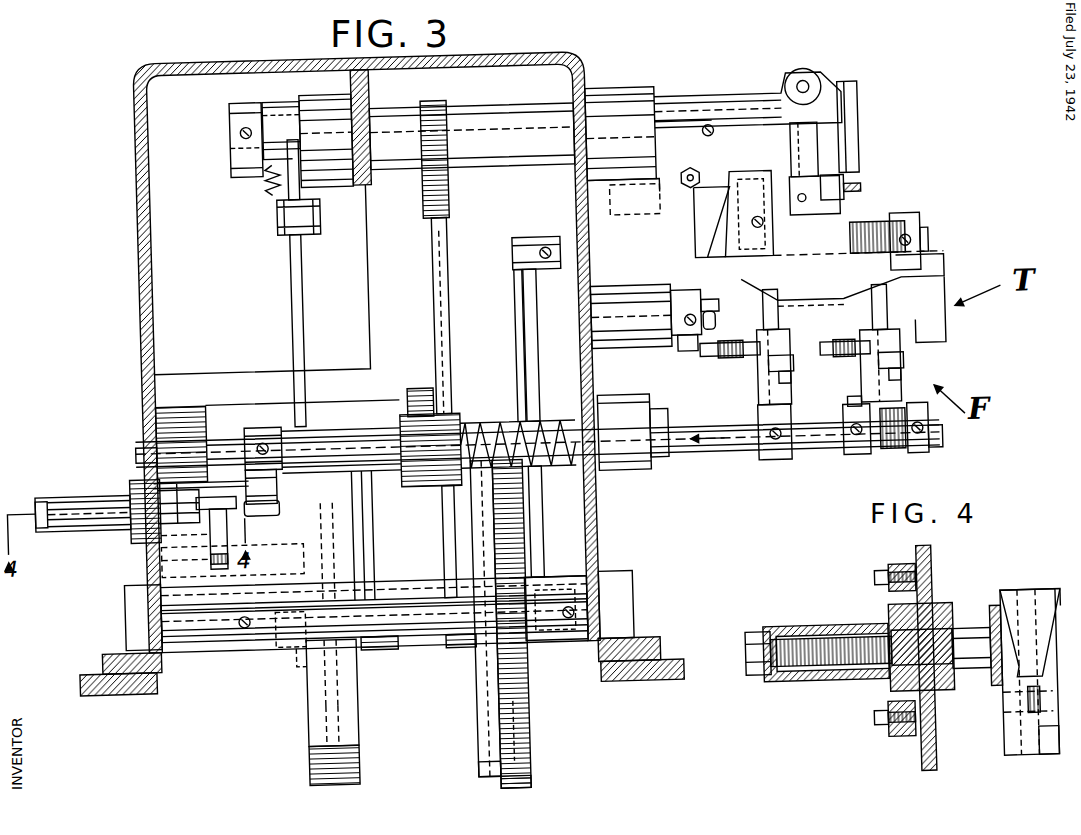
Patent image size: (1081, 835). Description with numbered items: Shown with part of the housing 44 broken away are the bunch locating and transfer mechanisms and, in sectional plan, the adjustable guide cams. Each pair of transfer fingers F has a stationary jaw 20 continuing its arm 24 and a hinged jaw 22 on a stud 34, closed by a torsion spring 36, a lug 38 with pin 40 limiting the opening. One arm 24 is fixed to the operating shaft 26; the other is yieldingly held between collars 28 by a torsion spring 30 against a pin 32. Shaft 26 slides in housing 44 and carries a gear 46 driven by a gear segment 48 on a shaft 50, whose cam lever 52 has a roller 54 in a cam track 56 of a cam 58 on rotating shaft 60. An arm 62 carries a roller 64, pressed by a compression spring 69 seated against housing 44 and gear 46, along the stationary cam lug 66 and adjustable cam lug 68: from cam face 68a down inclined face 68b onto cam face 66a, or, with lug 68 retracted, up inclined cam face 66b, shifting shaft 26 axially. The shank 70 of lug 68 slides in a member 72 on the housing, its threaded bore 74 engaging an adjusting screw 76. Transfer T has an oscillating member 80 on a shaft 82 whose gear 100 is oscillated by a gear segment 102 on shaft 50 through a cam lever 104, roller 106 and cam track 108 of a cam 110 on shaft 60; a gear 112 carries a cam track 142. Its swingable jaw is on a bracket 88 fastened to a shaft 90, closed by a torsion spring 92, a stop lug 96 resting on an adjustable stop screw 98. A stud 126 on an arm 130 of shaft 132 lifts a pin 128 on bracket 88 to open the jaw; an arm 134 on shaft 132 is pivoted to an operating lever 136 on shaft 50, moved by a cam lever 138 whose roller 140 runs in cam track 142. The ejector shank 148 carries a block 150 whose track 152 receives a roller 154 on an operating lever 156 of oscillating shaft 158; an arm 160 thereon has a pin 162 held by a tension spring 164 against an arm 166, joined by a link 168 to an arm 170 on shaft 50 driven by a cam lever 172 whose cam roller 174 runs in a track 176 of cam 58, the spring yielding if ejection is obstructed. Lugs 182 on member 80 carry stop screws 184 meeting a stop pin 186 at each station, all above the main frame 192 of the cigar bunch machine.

In FIG. 3, the stationary jaw 20 is at (766, 325).
In FIG. 3, the hinged jaw 22 is at (773, 296).
In FIG. 3, the arm 24 is at (791, 430).
In FIG. 3, the horizontal operating shaft 26 is at (942, 447).
In FIG. 3, the collars 28 is at (850, 463).
In FIG. 3, the torsion spring 30 is at (892, 458).
In FIG. 3, the pin 32 is at (855, 413).
In FIG. 3, the stud 34 is at (720, 361).
In FIG. 3, the torsion spring 36 is at (740, 363).
In FIG. 3, the lug 38 is at (790, 378).
In FIG. 3, the pin 40 is at (768, 380).
In FIG. 3, the housing 44 is at (143, 290).
In FIG. 4, the housing 44 is at (927, 570).
In FIG. 3, the gear 46 is at (415, 483).
In FIG. 3, the gear segment 48 is at (418, 385).
In FIG. 3, the shaft 50 is at (200, 397).
In FIG. 3, the cam lever 52 is at (370, 565).
In FIG. 3, the roller 54 is at (365, 645).
In FIG. 3, the cam track 56 is at (350, 700).
In FIG. 3, the cam 58 is at (350, 775).
In FIG. 3, the shaft 60 is at (405, 595).
In FIG. 3, the arm 62 is at (262, 420).
In FIG. 3, the roller 64 is at (250, 510).
In FIG. 3, the stationary cam lug 66 is at (224, 520).
In FIG. 4, the stationary cam lug 66 is at (1010, 768).
In FIG. 4, the cam face 66a is at (1040, 768).
In FIG. 4, the inclined cam face 66b is at (990, 618).
In FIG. 3, the adjustable cam lug 68 is at (244, 478).
In FIG. 4, the adjustable cam lug 68 is at (1035, 612).
In FIG. 4, the cam face 68a is at (1055, 603).
In FIG. 4, the inclined face 68b is at (1025, 703).
In FIG. 3, the compression spring 69 is at (545, 466).
In FIG. 3, the shank 70 is at (158, 520).
In FIG. 4, the shank 70 is at (835, 688).
In FIG. 3, the member 72 is at (66, 484).
In FIG. 4, the member 72 is at (930, 612).
In FIG. 4, the internally threaded bore 74 is at (880, 640).
In FIG. 3, the adjusting screw 76 is at (33, 495).
In FIG. 4, the adjusting screw 76 is at (800, 646).
In FIG. 3, the oscillating member 80 is at (780, 100).
In FIG. 3, the horizontal shaft 82 is at (483, 165).
In FIG. 3, the bracket 88 is at (920, 223).
In FIG. 3, the shaft 90 is at (933, 248).
In FIG. 3, the torsion spring 92 is at (878, 231).
In FIG. 3, the stop lug 96 is at (750, 196).
In FIG. 3, the adjustable stop screw 98 is at (758, 224).
In FIG. 3, the gear 100 is at (442, 98).
In FIG. 3, the gear segment 102 is at (452, 214).
In FIG. 3, the cam lever 104 is at (440, 520).
In FIG. 3, the roller 106 is at (455, 645).
In FIG. 3, the cam track 108 is at (469, 735).
In FIG. 3, the cam 110 is at (469, 770).
In FIG. 3, the gear 112 is at (521, 785).
In FIG. 3, the stud 126 is at (690, 294).
In FIG. 3, the pin 128 is at (710, 334).
In FIG. 3, the oscillating arm 130 is at (685, 355).
In FIG. 3, the shaft 132 is at (636, 281).
In FIG. 3, the arm 134 is at (563, 226).
In FIG. 3, the oscillating operating lever 136 is at (527, 330).
In FIG. 3, the cam lever 138 is at (548, 558).
In FIG. 3, the roller 140 is at (521, 690).
In FIG. 3, the cam track 142 is at (530, 740).
In FIG. 3, the shank 148 is at (812, 88).
In FIG. 3, the block 150 is at (846, 190).
In FIG. 3, the track 152 is at (850, 205).
In FIG. 3, the roller 154 is at (867, 195).
In FIG. 3, the operating lever 156 is at (705, 97).
In FIG. 3, the oscillating shaft 158 is at (548, 104).
In FIG. 3, the arm 160 is at (243, 165).
In FIG. 3, the pin 162 is at (291, 142).
In FIG. 3, the tension spring 164 is at (272, 180).
In FIG. 3, the arm 166 is at (306, 160).
In FIG. 3, the link 168 is at (318, 228).
In FIG. 3, the arm 170 is at (312, 306).
In FIG. 3, the cam lever 172 is at (300, 556).
In FIG. 3, the cam roller 174 is at (300, 660).
In FIG. 3, the track 176 is at (300, 735).
In FIG. 3, the lugs 182 is at (692, 195).
In FIG. 3, the stop screw 184 is at (705, 145).
In FIG. 3, the stop pin 186 is at (660, 217).
In FIG. 3, the main frame 192 is at (115, 678).